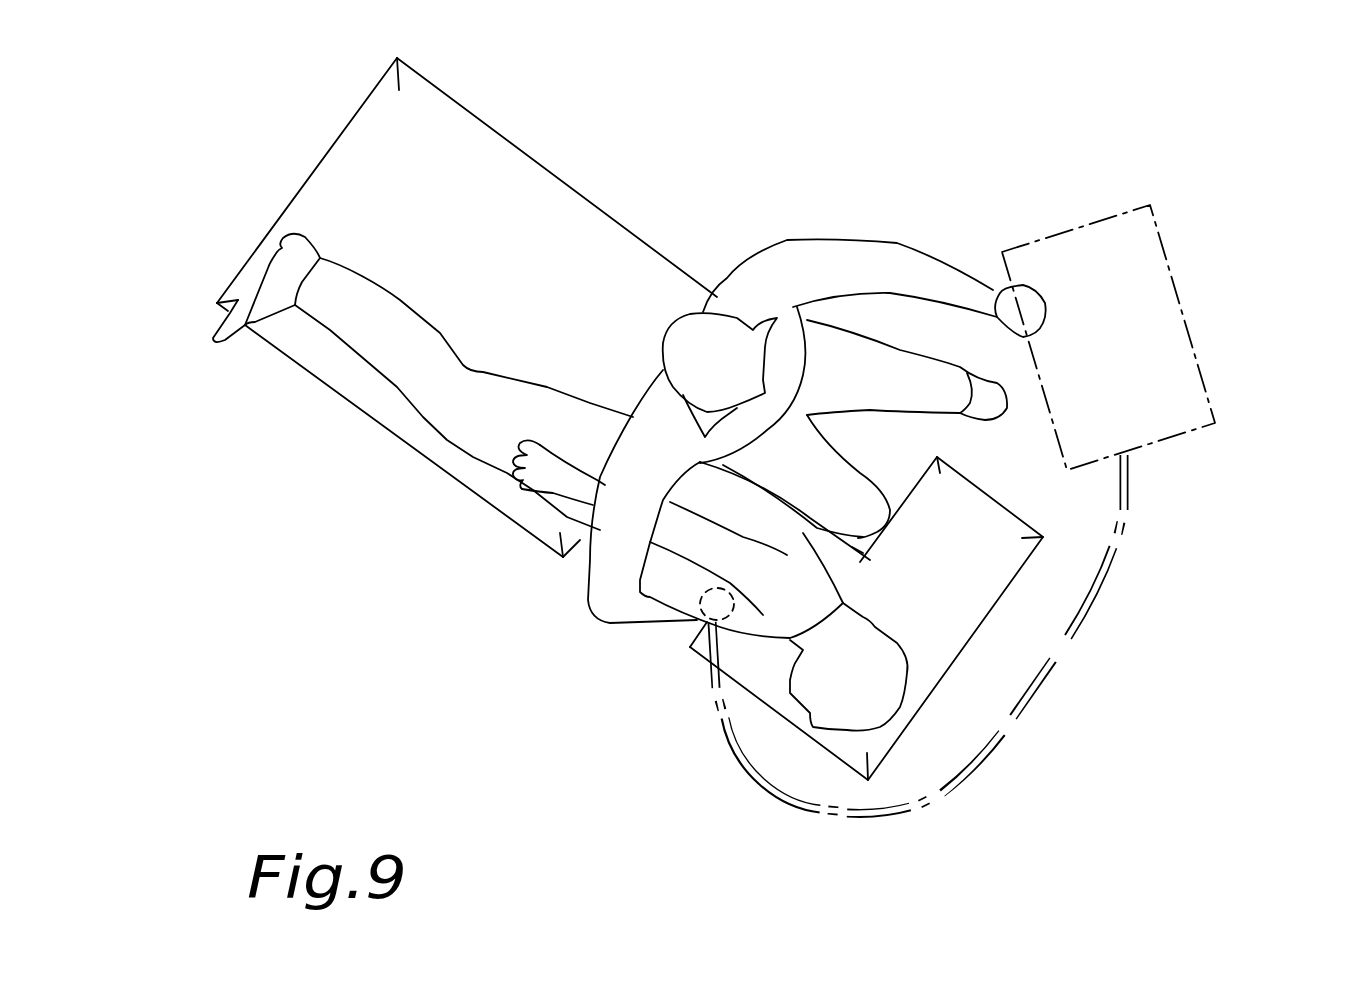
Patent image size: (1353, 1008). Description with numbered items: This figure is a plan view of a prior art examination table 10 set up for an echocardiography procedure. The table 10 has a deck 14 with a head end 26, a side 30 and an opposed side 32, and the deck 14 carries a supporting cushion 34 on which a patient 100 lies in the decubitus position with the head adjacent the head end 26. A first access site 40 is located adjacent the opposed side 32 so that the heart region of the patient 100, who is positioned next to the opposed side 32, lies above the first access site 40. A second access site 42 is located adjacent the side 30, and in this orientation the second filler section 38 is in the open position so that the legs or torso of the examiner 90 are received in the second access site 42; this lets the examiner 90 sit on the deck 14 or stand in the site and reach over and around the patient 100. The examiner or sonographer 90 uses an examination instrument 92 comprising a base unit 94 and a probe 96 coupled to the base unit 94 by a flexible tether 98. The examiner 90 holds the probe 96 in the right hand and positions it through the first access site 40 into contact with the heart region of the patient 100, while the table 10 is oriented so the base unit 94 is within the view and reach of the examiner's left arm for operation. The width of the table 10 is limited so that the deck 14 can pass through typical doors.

The examination table 10 is at (208, 183).
The deck 14 is at (300, 363).
The head end 26 is at (960, 667).
The side 30 is at (545, 157).
The opposed side 32 is at (372, 428).
The supporting cushion 34 is at (362, 183).
The second filler section 38 is at (863, 549).
The first access site 40 is at (572, 570).
The second access site 42 is at (898, 453).
The examiner 90 is at (800, 253).
The examination instrument 92 is at (1148, 512).
The base unit 94 is at (1187, 380).
The probe 96 is at (707, 613).
The flexible tether 98 is at (977, 777).
The patient 100 is at (488, 432).